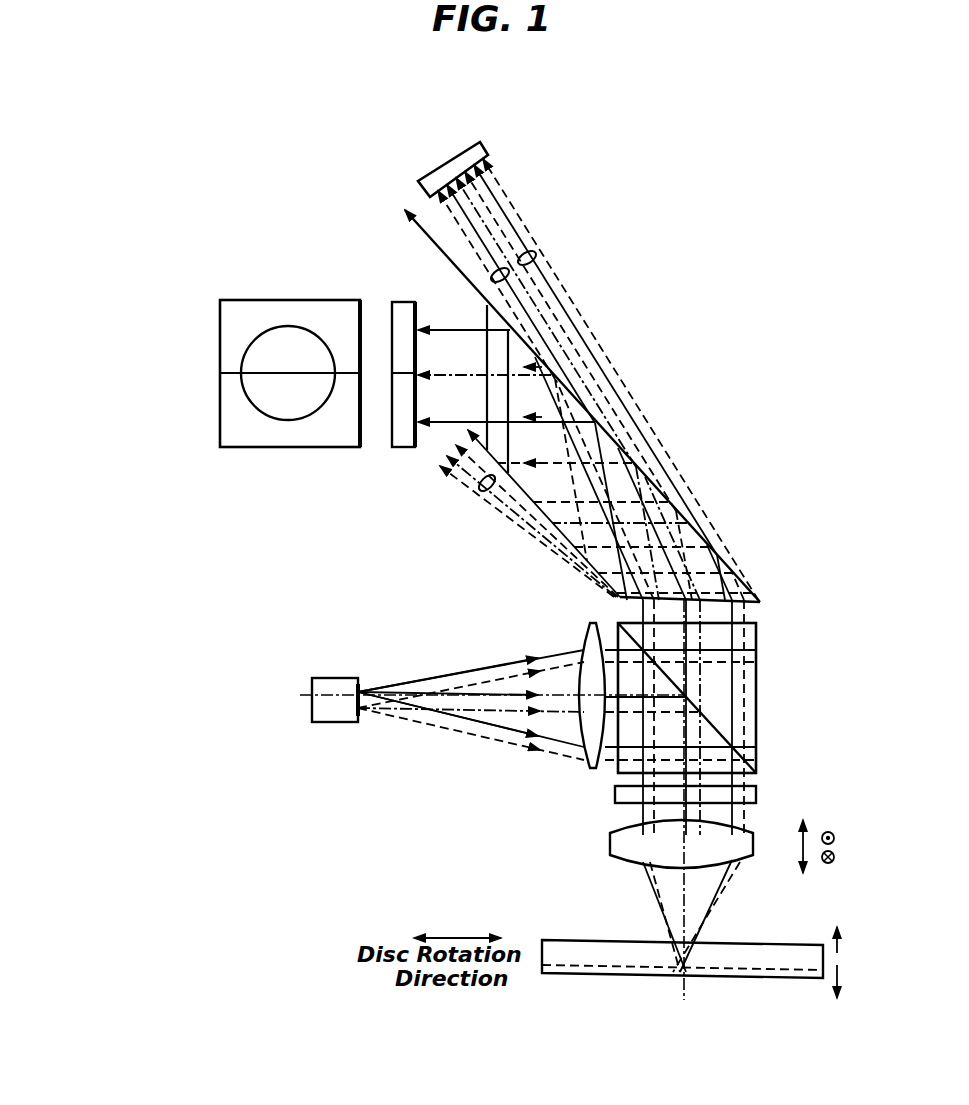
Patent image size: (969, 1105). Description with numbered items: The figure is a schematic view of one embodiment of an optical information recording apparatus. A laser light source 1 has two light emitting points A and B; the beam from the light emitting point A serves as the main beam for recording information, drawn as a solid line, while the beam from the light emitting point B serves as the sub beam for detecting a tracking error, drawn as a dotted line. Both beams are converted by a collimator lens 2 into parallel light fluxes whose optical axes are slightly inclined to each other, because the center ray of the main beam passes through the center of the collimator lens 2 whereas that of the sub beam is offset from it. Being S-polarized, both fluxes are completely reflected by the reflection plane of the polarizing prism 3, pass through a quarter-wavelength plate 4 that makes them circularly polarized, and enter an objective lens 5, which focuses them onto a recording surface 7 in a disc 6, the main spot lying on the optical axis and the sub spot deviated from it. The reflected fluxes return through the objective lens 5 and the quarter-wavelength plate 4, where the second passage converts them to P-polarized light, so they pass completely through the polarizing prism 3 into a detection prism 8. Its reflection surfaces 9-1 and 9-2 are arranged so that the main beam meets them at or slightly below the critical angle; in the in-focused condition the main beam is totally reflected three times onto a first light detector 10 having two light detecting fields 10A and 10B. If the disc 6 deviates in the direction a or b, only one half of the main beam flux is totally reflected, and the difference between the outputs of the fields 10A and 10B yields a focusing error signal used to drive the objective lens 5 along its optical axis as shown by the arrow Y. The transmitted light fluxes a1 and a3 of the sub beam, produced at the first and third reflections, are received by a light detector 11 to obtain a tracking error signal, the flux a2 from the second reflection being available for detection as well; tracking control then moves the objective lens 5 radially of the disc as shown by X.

The laser light source 1 is at (345, 680).
The collimator lens 2 is at (592, 636).
The polarizing prism 3 is at (725, 667).
The quarter-wavelength plate 4 is at (753, 794).
The objective lens 5 is at (618, 842).
The disc 6 is at (578, 947).
The recording surface 7 is at (575, 963).
The detection prism 8 is at (692, 521).
The reflection surface 9-1 is at (610, 437).
The reflection surface 9-2 is at (540, 513).
The first light detector 10 is at (215, 328).
The light detecting field 10A is at (293, 424).
The light detecting field 10B is at (298, 322).
The light detector 11 is at (475, 142).
The transmitted light flux a1 is at (535, 256).
The transmitted light flux a2 is at (480, 488).
The transmitted light flux a3 is at (510, 276).
The light emitting point A is at (362, 692).
The light emitting point B is at (360, 712).
The radial direction X is at (834, 856).
The optical axis direction Y is at (803, 850).
The deviation direction a is at (847, 935).
The deviation direction b is at (847, 984).